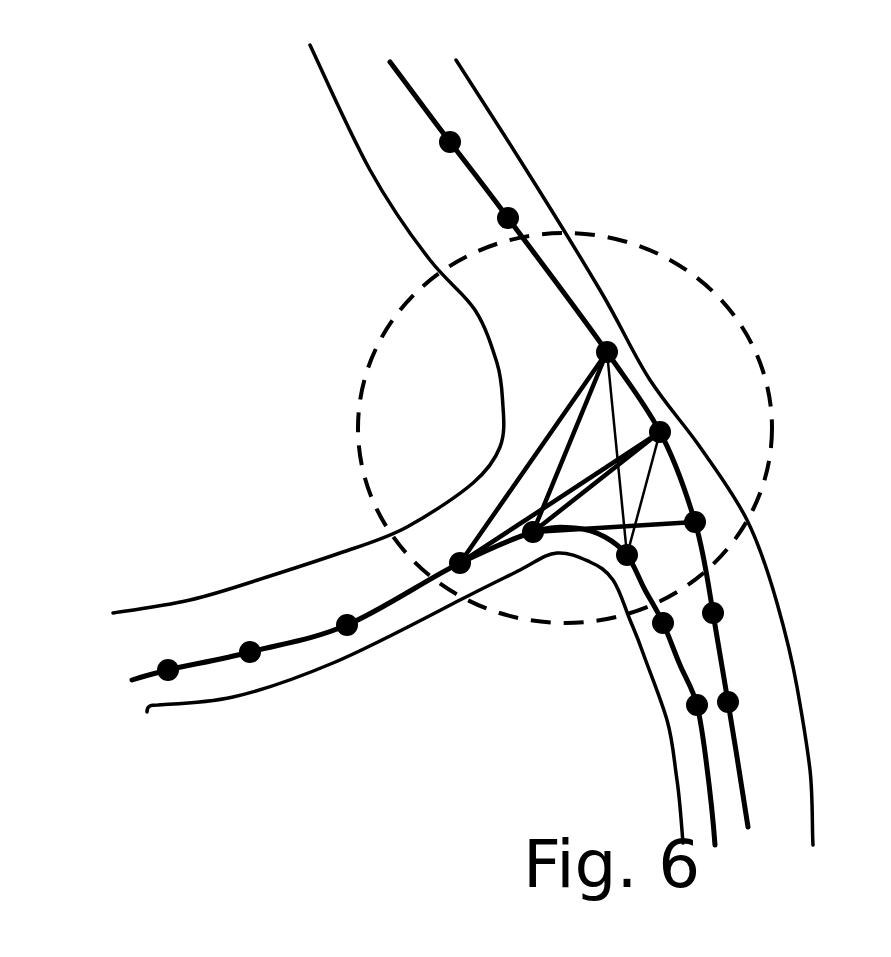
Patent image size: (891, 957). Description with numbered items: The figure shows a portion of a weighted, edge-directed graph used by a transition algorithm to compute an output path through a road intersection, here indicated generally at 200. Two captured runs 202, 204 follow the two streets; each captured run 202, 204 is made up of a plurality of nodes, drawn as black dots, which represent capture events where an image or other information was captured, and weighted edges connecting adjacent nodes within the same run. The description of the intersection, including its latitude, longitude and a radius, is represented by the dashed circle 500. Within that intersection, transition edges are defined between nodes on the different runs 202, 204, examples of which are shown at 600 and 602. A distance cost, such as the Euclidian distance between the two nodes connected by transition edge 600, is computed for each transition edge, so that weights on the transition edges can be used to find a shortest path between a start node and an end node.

The map of road network 200 is at (252, 168).
The captured run 202 is at (132, 678).
The captured run 204 is at (720, 560).
The dashed circle 500 is at (752, 336).
The transition edge 600 is at (582, 382).
The transition edge 602 is at (555, 477).